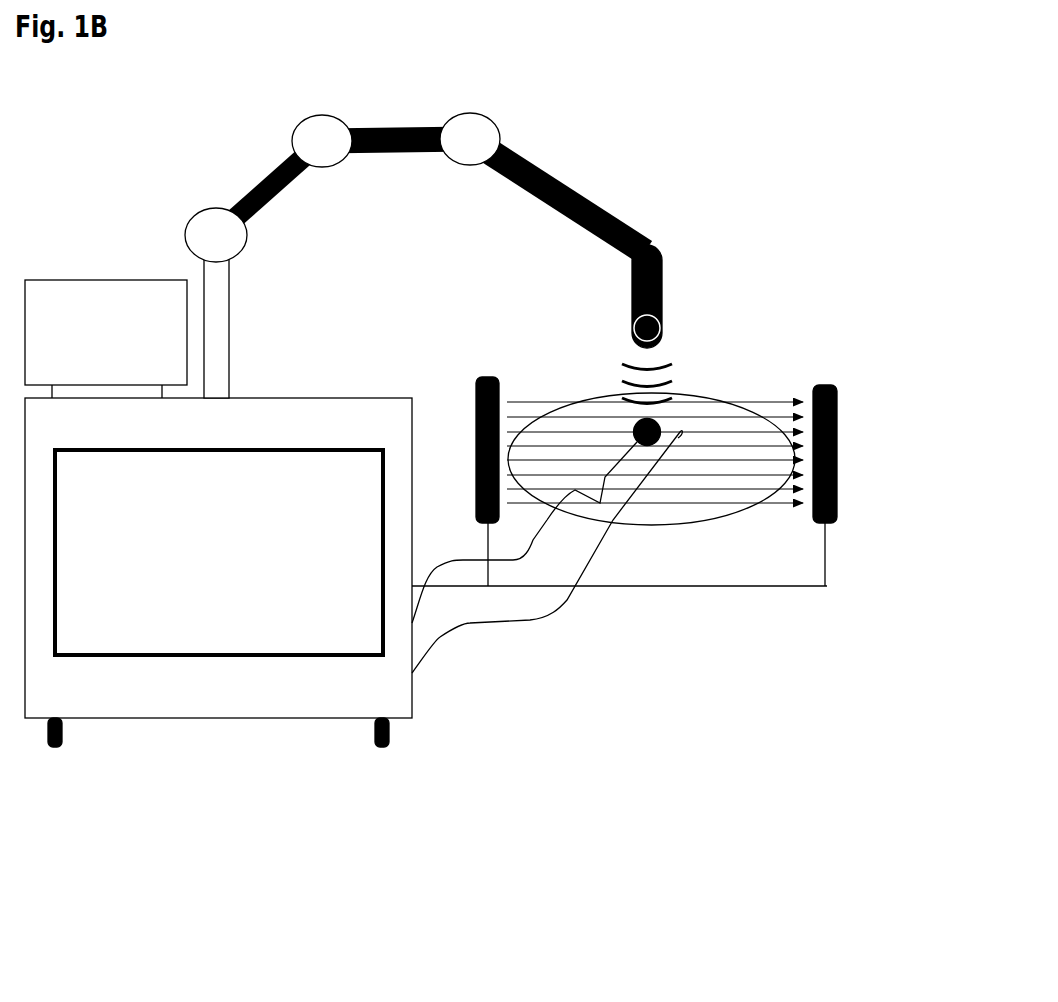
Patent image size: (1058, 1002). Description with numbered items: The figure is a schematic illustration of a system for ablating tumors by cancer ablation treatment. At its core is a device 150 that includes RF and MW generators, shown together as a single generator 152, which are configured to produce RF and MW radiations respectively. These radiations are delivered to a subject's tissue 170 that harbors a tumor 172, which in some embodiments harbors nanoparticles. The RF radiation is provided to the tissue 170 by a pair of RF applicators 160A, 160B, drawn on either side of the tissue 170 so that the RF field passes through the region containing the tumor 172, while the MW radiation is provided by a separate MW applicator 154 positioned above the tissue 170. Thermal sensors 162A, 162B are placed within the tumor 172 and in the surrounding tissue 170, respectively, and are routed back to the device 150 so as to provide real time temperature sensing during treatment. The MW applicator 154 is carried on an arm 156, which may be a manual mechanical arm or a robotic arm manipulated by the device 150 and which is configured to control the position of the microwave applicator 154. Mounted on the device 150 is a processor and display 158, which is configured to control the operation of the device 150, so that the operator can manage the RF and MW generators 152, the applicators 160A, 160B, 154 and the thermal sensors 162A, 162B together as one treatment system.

The device 150 is at (235, 792).
The generator 152 is at (130, 670).
The MW applicator 154 is at (688, 275).
The arm 156 is at (590, 153).
The processor and display 158 is at (105, 258).
The RF applicator 160A is at (857, 445).
The RF applicator 160B is at (488, 367).
The thermal sensor 162A is at (487, 647).
The thermal sensor 162B is at (461, 540).
The tissue 170 is at (728, 523).
The tumor 172 is at (667, 422).